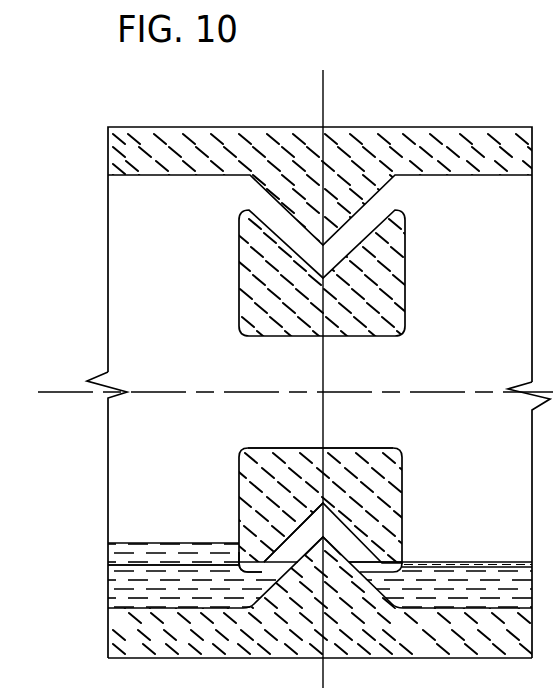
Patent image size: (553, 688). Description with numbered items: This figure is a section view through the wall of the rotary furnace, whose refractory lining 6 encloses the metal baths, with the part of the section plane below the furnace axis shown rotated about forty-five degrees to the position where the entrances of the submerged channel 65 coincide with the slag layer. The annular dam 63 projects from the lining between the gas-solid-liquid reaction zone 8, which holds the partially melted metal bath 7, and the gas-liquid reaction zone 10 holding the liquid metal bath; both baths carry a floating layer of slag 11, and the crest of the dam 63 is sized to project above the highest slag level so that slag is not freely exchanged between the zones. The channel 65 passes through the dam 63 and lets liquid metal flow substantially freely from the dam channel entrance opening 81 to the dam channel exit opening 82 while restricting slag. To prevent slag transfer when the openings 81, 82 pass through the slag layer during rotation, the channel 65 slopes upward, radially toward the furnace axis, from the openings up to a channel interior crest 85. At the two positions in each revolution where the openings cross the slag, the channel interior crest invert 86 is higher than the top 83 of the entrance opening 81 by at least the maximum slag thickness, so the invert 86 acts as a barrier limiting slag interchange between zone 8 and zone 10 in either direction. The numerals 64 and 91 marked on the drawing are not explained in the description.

The refractory lining 6 is at (118, 636).
The partially melted metal bath 7 is at (115, 588).
The gas-solid-liquid reaction zone 8 is at (162, 476).
The gas-liquid reaction zone 10 is at (486, 475).
The floating layer of slag 11 is at (135, 560).
The annular dam 63 is at (240, 459).
The upper die block 64 is at (264, 374).
The channel 65 is at (373, 560).
The dam channel entrance opening 81 is at (240, 587).
The dam channel exit opening 82 is at (397, 587).
The top of entrance opening 83 is at (239, 566).
The channel interior crest 85 is at (293, 530).
The channel interior crest invert 86 is at (323, 538).
The block top surface 91 is at (347, 447).